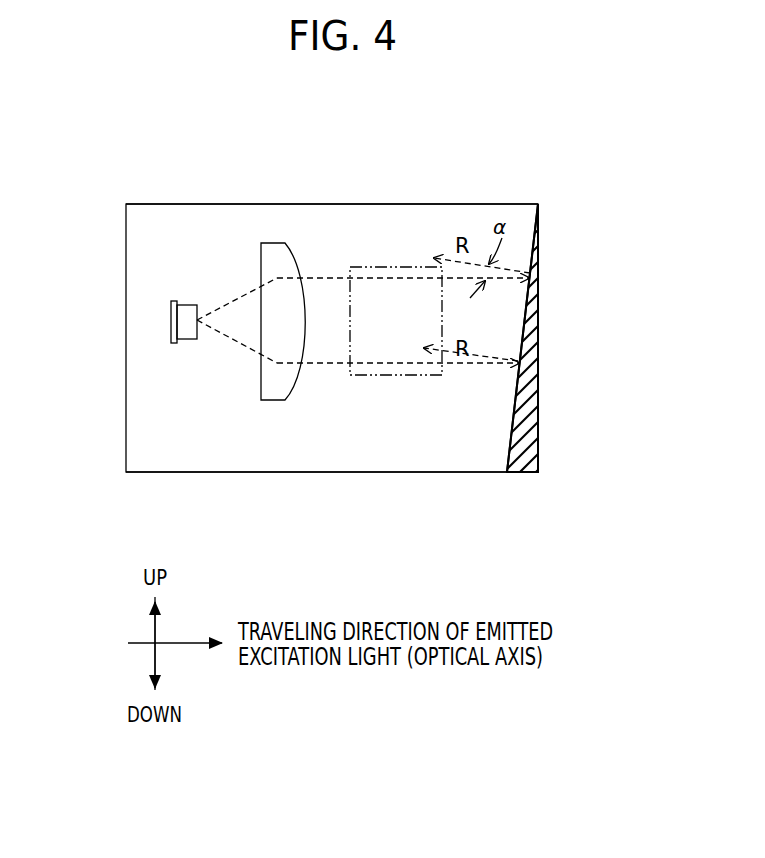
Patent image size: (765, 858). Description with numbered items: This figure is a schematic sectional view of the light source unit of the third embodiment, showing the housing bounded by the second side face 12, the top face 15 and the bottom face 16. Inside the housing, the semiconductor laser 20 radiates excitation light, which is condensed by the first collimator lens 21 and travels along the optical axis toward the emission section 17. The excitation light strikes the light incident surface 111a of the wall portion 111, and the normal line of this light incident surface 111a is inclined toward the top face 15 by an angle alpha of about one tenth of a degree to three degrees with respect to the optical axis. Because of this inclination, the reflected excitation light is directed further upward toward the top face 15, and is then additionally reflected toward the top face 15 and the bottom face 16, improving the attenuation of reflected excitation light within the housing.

The second side face 12 is at (124, 331).
The top face 15 is at (388, 204).
The bottom face 16 is at (352, 473).
The emission section 17 is at (360, 268).
The semiconductor laser 20 is at (178, 345).
The first collimator lens 21 is at (268, 398).
The wavelength conversion member 111 is at (552, 309).
The light incident surface 111a is at (513, 393).